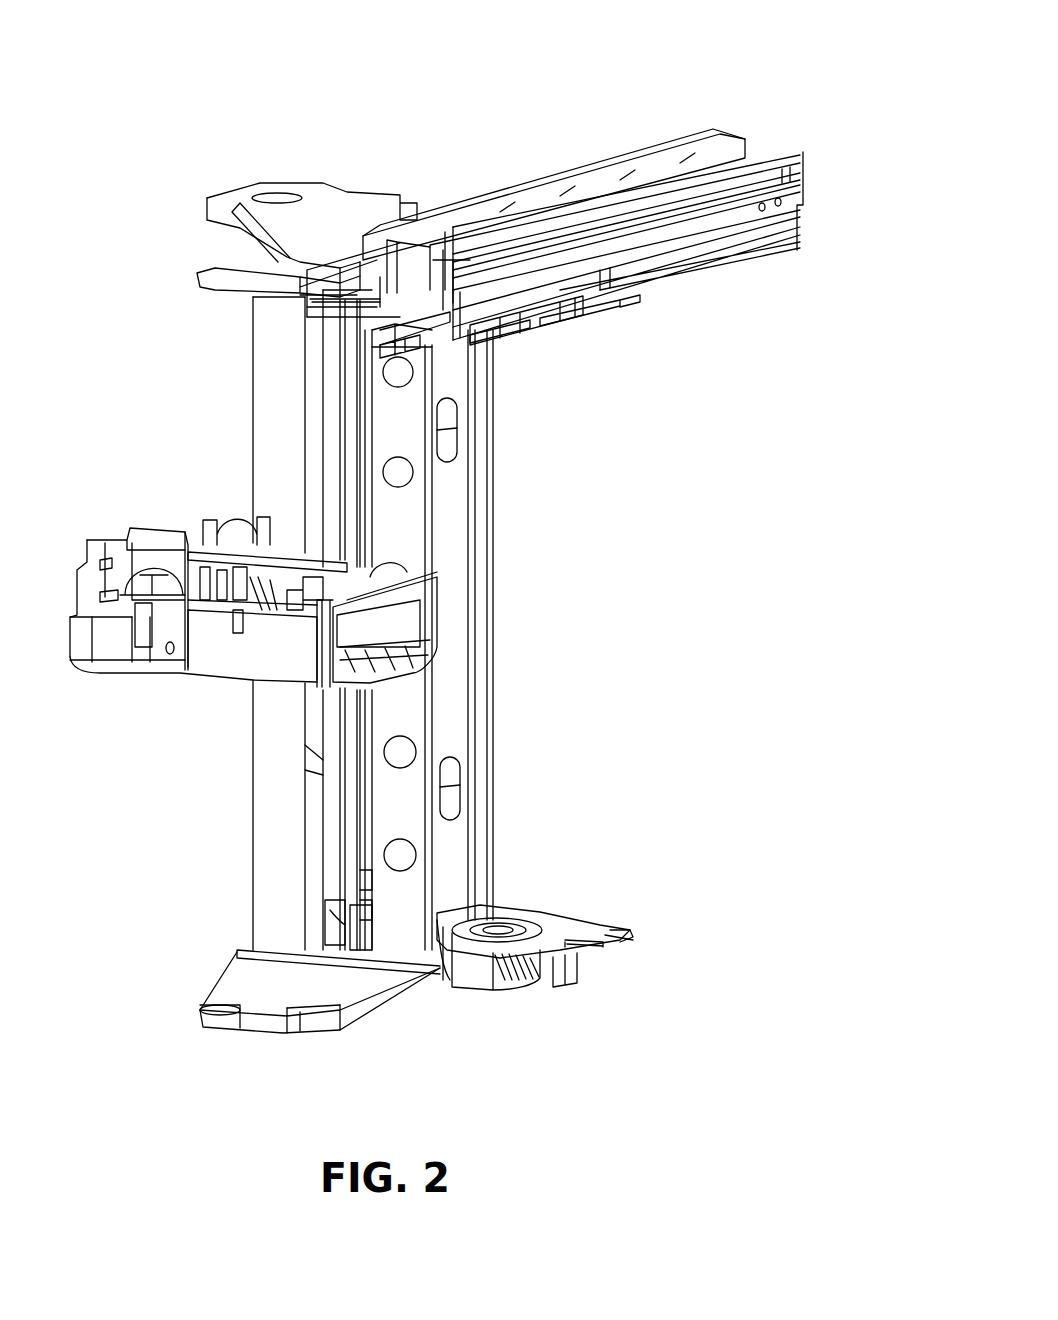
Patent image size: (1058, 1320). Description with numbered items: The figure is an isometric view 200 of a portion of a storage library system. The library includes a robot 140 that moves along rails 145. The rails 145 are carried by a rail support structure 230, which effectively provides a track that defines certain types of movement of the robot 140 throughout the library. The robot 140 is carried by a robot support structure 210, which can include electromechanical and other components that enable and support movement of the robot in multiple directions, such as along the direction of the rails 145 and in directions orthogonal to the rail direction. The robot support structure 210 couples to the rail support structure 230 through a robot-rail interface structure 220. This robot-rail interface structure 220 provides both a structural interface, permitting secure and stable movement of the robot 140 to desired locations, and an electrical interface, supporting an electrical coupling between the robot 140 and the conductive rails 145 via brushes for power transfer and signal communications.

The isometric view 200 is at (607, 76).
The rails 145 is at (333, 325).
The robot 140 is at (147, 528).
The robot support structure 210 is at (455, 635).
The robot-rail interface structure 220 is at (508, 340).
The rail support structure 230 is at (712, 250).